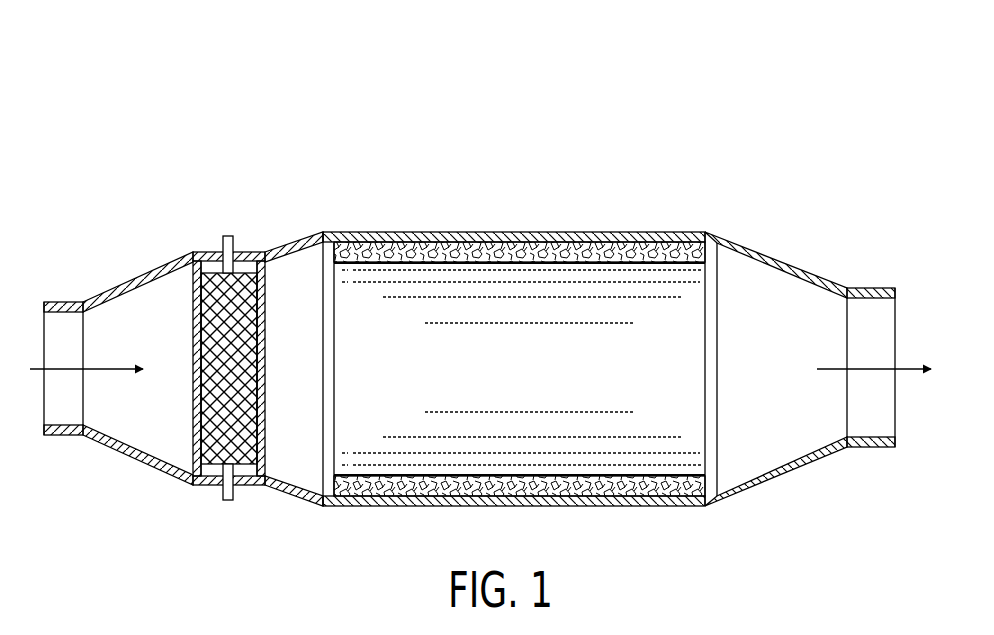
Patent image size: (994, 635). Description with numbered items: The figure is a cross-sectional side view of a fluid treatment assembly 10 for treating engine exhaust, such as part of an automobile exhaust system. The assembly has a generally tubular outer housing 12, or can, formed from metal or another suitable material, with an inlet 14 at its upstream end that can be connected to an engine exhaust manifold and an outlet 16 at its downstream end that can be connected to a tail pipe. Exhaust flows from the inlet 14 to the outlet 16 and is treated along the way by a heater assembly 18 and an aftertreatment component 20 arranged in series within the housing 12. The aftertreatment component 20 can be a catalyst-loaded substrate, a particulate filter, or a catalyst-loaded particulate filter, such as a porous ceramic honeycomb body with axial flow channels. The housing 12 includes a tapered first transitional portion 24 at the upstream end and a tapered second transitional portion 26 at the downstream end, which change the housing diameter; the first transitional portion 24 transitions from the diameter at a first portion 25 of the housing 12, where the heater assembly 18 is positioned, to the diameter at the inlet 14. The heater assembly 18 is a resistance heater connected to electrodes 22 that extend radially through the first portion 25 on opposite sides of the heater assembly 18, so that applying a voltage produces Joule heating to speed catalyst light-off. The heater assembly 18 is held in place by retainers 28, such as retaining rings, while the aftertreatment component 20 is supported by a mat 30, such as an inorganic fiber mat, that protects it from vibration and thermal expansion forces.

The fluid treatment assembly 10 is at (116, 116).
The outer housing 12 is at (383, 240).
The inlet 14 is at (33, 410).
The outlet 16 is at (903, 412).
The heater assembly 18 is at (174, 410).
The aftertreatment component 20 is at (498, 312).
The electrodes 22 is at (232, 238).
The first transitional portion 24 is at (137, 283).
The first portion 25 is at (205, 252).
The second transitional portion 26 is at (793, 270).
The retainers 28 is at (263, 262).
The mat 30 is at (585, 250).